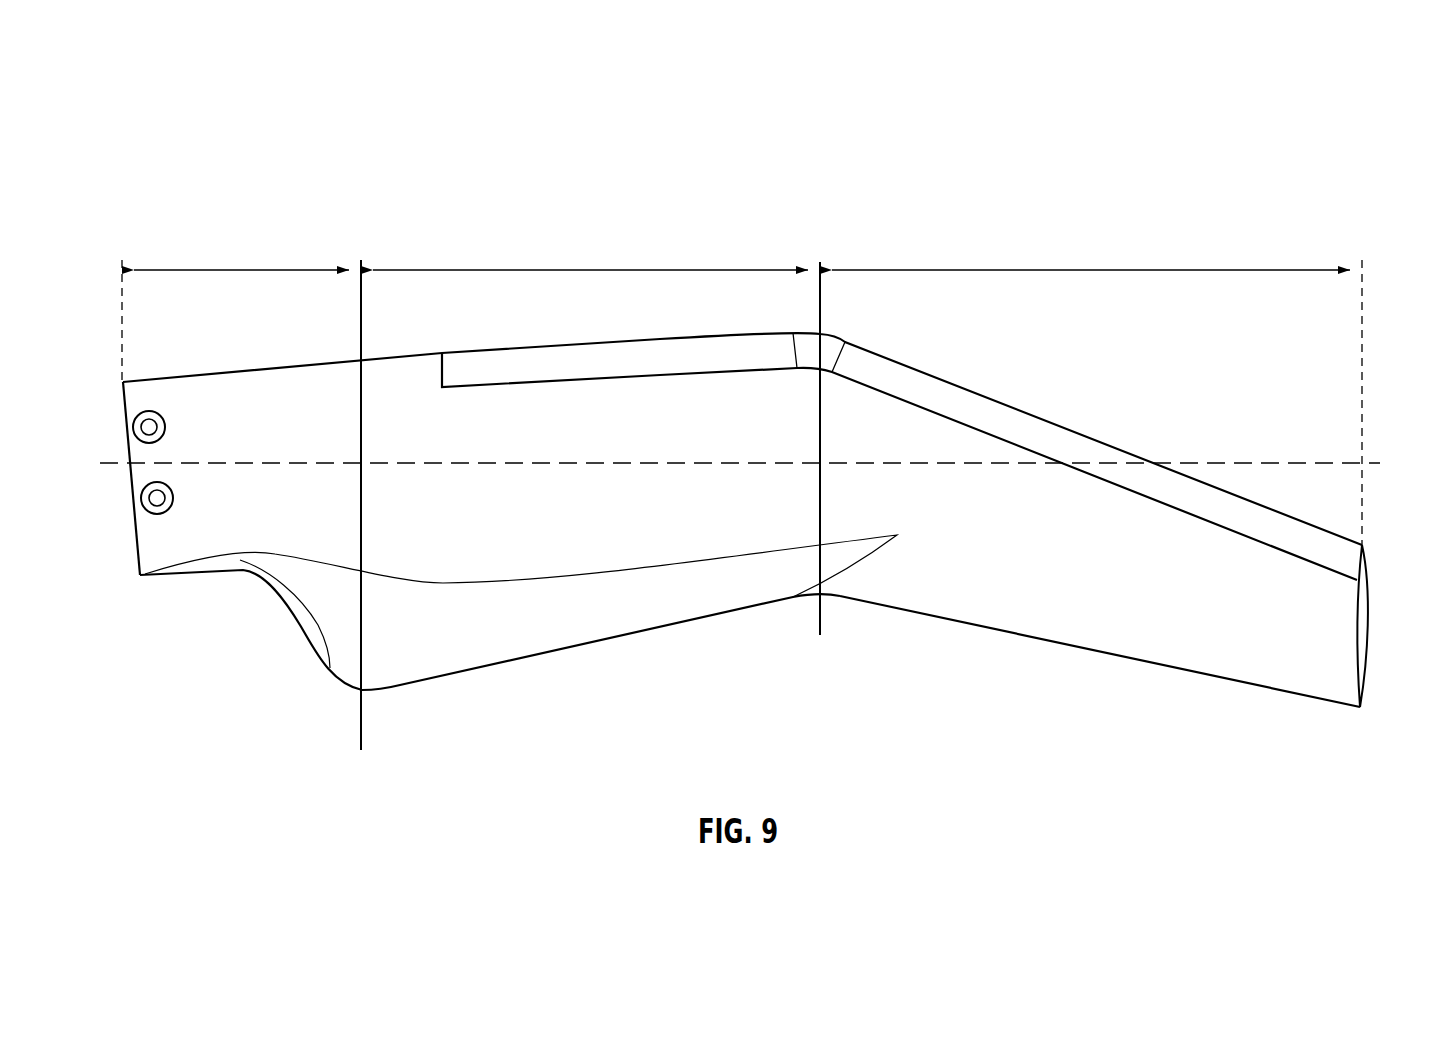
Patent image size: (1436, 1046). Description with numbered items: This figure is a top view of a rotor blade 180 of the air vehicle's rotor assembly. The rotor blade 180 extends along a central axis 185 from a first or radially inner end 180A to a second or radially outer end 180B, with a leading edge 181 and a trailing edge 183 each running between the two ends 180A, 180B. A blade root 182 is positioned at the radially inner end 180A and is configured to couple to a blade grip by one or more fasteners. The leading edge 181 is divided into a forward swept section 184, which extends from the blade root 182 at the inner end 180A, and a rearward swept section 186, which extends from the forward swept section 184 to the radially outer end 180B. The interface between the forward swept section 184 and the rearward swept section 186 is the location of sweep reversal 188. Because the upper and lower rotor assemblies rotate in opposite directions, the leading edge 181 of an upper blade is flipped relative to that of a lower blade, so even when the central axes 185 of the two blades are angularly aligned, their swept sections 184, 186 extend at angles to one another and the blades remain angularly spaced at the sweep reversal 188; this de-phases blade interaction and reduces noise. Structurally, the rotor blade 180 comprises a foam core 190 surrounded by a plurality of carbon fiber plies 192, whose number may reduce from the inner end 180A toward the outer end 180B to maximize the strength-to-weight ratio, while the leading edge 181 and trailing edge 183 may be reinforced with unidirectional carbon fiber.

The rotor blade 180 is at (198, 87).
The radially inner end 180A is at (157, 542).
The radially outer end 180B is at (1367, 603).
The leading edge 181 is at (1103, 440).
The blade root 182 is at (243, 268).
The trailing edge 183 is at (1193, 672).
The forward swept section 184 is at (590, 268).
The central axis 185 is at (1303, 460).
The rearward swept section 186 is at (1090, 268).
The sweep reversal 188 is at (818, 287).
The foam core 190 is at (1365, 580).
The carbon fiber plies 192 is at (1287, 678).